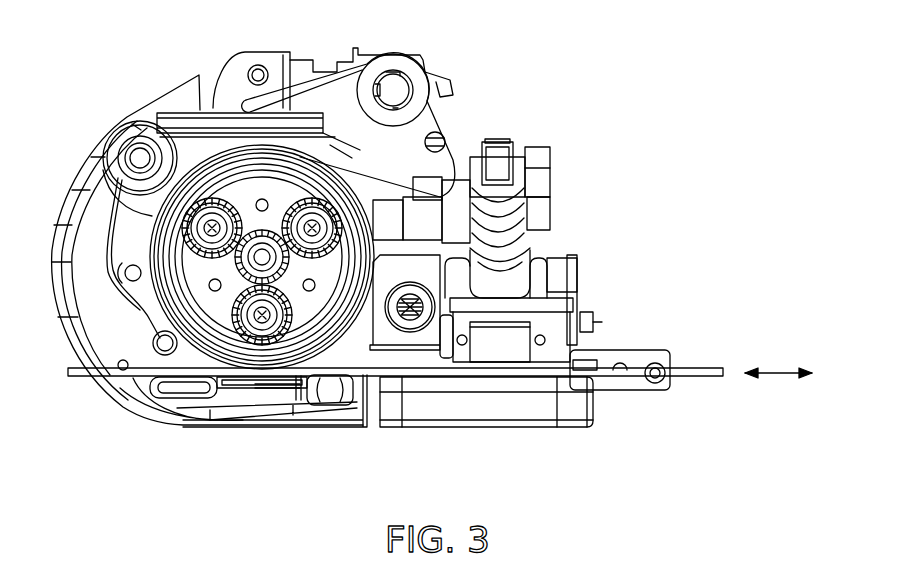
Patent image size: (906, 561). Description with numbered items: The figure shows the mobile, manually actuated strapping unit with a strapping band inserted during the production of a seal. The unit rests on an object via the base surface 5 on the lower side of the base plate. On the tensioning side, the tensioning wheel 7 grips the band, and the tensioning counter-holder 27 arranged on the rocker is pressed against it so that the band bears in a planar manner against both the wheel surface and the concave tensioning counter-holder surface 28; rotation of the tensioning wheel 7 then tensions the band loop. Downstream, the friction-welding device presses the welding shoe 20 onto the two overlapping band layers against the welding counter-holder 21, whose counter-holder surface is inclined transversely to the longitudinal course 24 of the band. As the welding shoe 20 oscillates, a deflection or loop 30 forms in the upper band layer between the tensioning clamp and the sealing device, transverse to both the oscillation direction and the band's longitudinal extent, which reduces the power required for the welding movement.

The tensioning wheel 7 is at (200, 152).
The deflection or loop 30 is at (368, 305).
The welding shoe 20 is at (508, 362).
The base surface 5 is at (474, 427).
The welding counter-holder 21 is at (538, 404).
The tensioning counter-holder 27 is at (285, 386).
The tensioning counter-holder surface 28 is at (296, 386).
The longitudinal course 24 is at (781, 372).